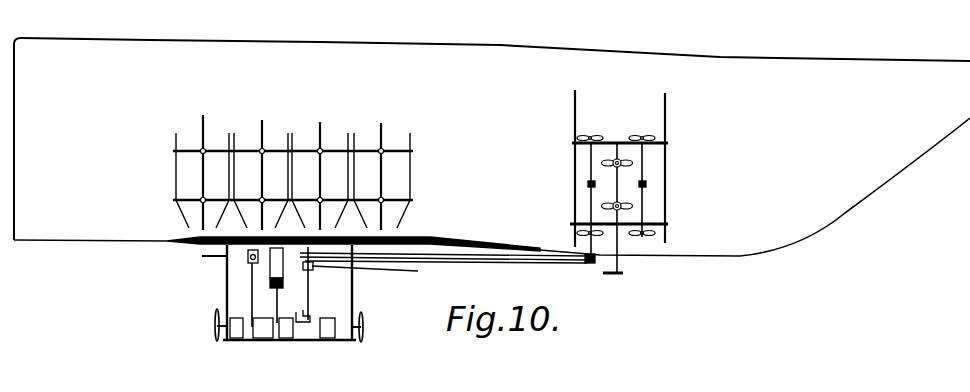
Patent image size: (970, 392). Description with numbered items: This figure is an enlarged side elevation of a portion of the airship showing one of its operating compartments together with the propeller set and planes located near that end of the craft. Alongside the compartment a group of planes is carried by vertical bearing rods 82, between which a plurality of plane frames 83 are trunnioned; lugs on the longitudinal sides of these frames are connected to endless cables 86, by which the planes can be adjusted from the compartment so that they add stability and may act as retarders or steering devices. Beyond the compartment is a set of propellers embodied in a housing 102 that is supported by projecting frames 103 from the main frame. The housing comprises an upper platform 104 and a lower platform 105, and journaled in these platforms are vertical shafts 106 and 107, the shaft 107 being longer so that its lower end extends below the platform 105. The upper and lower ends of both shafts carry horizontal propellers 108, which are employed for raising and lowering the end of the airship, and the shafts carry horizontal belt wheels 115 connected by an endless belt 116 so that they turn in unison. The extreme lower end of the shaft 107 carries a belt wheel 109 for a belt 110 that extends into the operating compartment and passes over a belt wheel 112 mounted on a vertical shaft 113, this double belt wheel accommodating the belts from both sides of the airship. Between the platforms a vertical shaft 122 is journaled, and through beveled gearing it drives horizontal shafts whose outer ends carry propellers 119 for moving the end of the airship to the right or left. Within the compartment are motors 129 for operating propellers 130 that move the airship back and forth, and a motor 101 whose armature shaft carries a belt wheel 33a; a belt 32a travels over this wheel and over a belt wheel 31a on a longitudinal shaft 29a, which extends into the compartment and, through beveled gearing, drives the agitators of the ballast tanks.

The longitudinal shaft 29a is at (227, 257).
The belt wheel 31a is at (246, 266).
The belt 32a is at (250, 289).
The belt wheel 33a is at (253, 341).
The vertical bearing rods 82 is at (383, 143).
The plane frames 83 is at (366, 158).
The endless cables 86 is at (364, 201).
The motor 101 is at (263, 340).
The housing 102 is at (607, 168).
The projecting frames 103 is at (667, 98).
The platform 104 is at (668, 143).
The platform 105 is at (668, 224).
The vertical shaft 106 is at (575, 203).
The vertical shaft 107 is at (591, 160).
The horizontal propellers 108 is at (657, 137).
The belt wheel 109 is at (594, 266).
The belt 110 is at (548, 262).
The belt wheel 112 is at (368, 238).
The vertical shaft 113 is at (398, 268).
The horizontal belt wheels 115 is at (646, 184).
The endless belt 116 is at (628, 184).
The propellers 119 is at (604, 163).
The vertical shaft 122 is at (630, 270).
The motors 129 is at (237, 340).
The propellers 130 is at (216, 312).